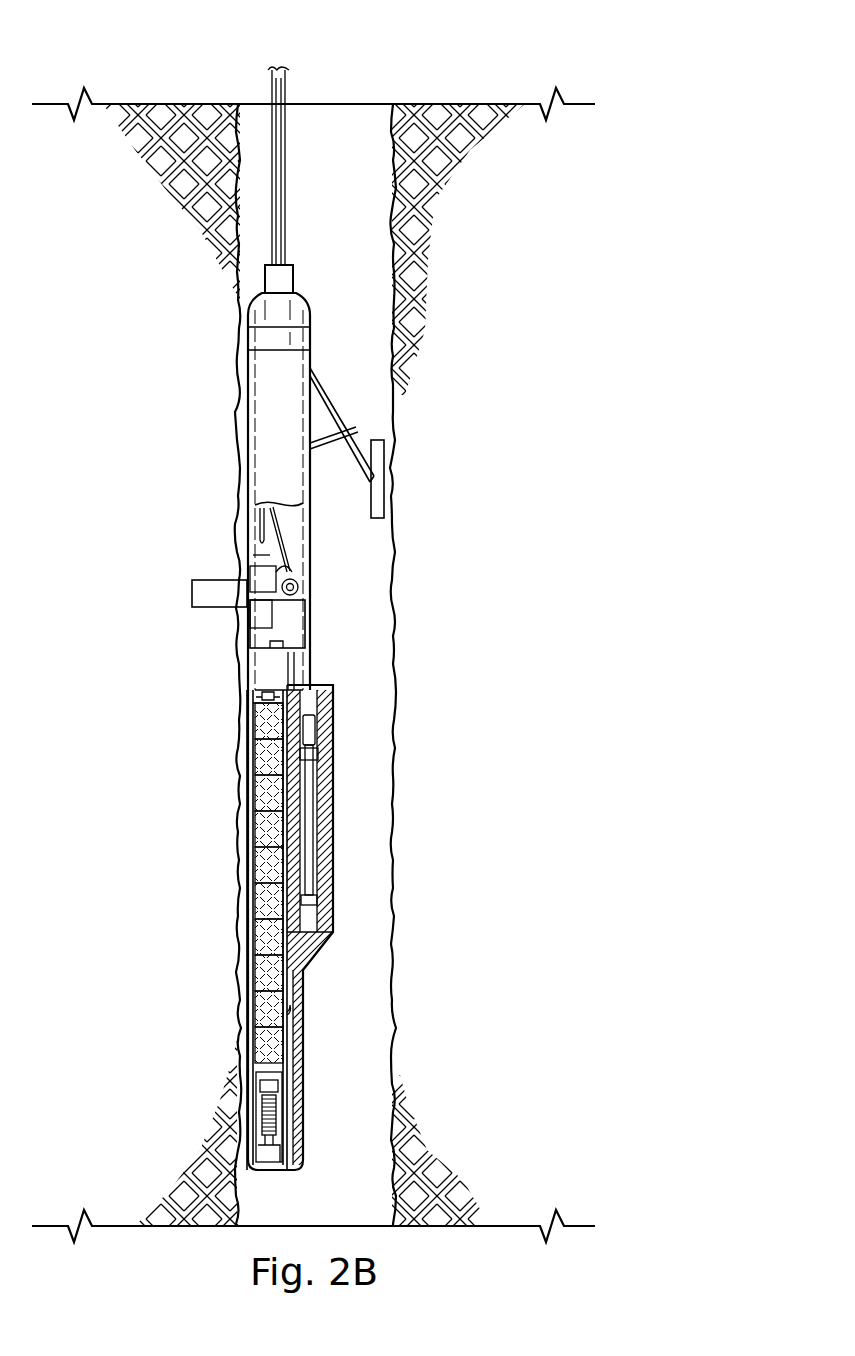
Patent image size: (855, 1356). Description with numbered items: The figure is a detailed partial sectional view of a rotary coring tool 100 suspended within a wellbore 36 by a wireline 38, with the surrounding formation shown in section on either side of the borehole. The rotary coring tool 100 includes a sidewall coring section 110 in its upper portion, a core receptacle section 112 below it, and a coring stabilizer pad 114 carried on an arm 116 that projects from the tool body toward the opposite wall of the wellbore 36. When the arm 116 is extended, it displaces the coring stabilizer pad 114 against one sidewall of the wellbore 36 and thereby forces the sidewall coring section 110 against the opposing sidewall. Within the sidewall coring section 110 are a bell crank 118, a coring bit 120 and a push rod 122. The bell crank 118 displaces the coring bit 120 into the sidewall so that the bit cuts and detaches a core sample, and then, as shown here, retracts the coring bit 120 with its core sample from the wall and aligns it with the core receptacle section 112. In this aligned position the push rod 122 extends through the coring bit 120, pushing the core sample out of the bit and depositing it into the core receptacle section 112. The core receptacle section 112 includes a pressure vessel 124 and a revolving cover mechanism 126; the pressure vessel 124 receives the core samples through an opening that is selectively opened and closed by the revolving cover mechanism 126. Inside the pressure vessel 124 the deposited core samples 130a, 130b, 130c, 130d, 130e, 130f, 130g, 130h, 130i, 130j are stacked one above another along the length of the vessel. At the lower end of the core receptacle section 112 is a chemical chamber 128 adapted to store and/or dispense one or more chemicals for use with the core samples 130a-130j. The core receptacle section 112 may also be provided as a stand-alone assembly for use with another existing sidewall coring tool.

The rotary coring tool 100 is at (472, 74).
The wireline 38 is at (285, 169).
The wellbore 36 is at (394, 1008).
The sidewall coring section 110 is at (257, 524).
The core receptacle section 112 is at (333, 810).
The coring stabilizer pad 114 is at (364, 500).
The arm 116 is at (340, 410).
The bell crank 118 is at (268, 551).
The coring bit 120 is at (260, 617).
The push rod 122 is at (257, 518).
The pressure vessel 124 is at (310, 960).
The revolving cover mechanism 126 is at (258, 668).
The chemical chamber 128 is at (262, 1148).
The core sample 130a is at (258, 726).
The core sample 130b is at (258, 760).
The core sample 130c is at (258, 795).
The core sample 130d is at (258, 831).
The core sample 130e is at (258, 866).
The core sample 130f is at (258, 901).
The core sample 130g is at (258, 937).
The core sample 130h is at (258, 975).
The core sample 130i is at (258, 1011).
The core sample 130j is at (258, 1046).